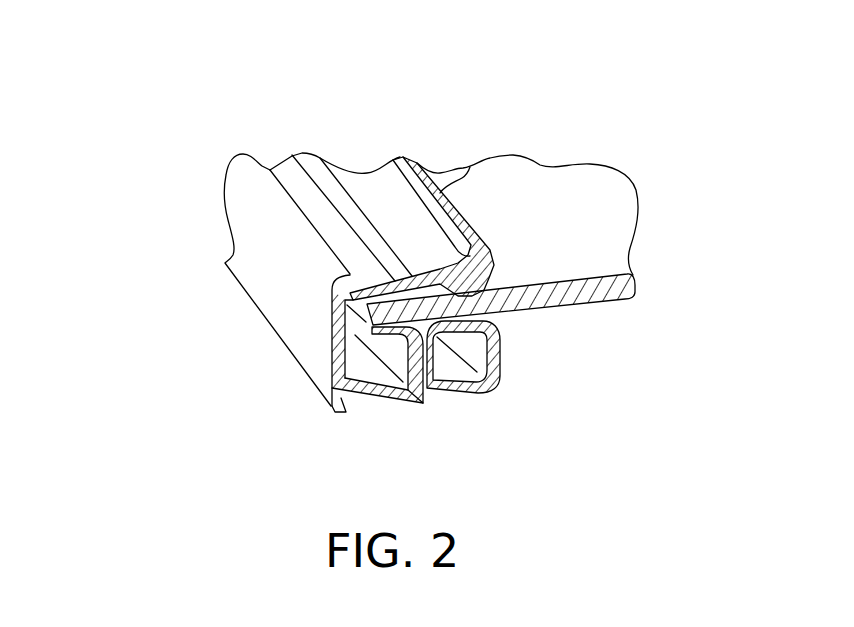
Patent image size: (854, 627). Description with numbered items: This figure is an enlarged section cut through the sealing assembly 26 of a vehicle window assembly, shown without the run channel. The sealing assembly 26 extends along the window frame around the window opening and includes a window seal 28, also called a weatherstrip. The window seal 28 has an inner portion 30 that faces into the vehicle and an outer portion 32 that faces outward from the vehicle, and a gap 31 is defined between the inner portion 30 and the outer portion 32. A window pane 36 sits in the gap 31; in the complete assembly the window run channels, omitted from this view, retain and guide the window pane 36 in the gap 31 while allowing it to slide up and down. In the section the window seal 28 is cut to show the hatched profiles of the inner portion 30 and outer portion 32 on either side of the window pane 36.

The sealing assembly 26 is at (203, 152).
The window seal 28 is at (263, 320).
The inner portion 30 is at (470, 167).
The gap 31 is at (511, 286).
The outer portion 32 is at (462, 394).
The window pane 36 is at (637, 185).